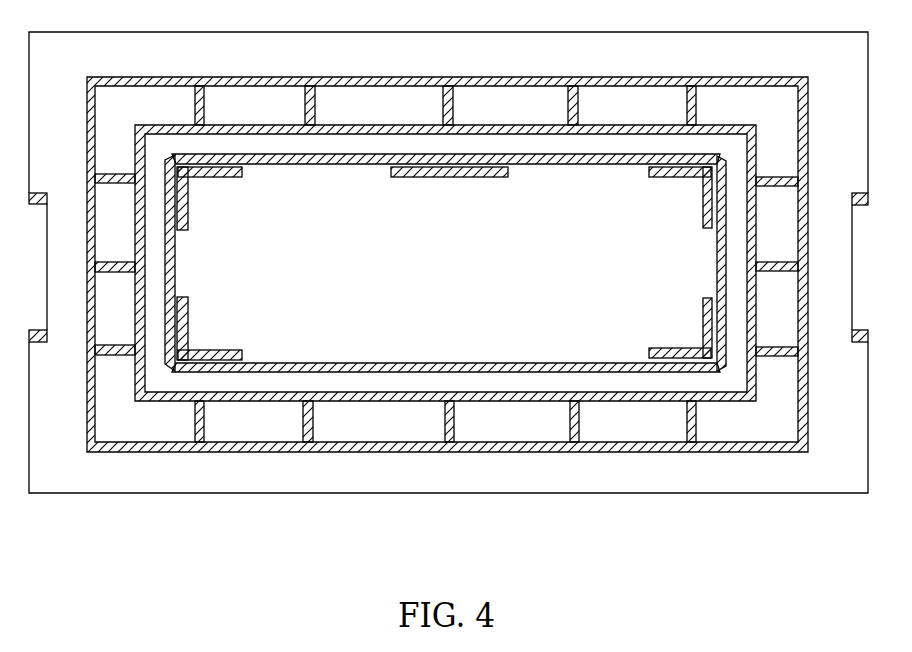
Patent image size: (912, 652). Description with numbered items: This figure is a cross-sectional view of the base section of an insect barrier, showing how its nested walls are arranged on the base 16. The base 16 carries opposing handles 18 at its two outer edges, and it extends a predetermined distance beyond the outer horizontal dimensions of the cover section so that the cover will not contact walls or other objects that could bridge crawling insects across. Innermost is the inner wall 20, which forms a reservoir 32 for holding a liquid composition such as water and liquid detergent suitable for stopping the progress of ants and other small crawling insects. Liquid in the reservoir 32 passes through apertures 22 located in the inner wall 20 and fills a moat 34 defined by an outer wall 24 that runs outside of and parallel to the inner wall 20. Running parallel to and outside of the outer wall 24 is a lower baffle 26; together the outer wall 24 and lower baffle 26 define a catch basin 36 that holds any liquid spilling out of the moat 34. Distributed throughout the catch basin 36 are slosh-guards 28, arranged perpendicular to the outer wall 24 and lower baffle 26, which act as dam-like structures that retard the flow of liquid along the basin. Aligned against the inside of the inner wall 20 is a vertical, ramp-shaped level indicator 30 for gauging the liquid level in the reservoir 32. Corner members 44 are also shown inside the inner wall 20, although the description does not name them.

The base 16 is at (728, 468).
The handles 18 is at (32, 204).
The inner wall 20 is at (347, 363).
The apertures 22 is at (172, 365).
The outer wall 24 is at (353, 395).
The lower baffle 26 is at (663, 445).
The slosh-guards 28 is at (580, 423).
The level indicator 30 is at (443, 177).
The reservoir 32 is at (359, 252).
The moat 34 is at (478, 386).
The catch basin 36 is at (470, 423).
The corner bracket 44 is at (213, 350).